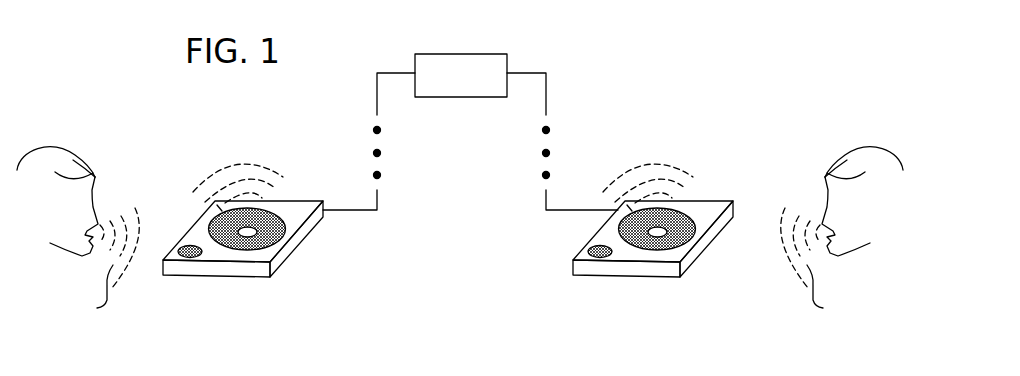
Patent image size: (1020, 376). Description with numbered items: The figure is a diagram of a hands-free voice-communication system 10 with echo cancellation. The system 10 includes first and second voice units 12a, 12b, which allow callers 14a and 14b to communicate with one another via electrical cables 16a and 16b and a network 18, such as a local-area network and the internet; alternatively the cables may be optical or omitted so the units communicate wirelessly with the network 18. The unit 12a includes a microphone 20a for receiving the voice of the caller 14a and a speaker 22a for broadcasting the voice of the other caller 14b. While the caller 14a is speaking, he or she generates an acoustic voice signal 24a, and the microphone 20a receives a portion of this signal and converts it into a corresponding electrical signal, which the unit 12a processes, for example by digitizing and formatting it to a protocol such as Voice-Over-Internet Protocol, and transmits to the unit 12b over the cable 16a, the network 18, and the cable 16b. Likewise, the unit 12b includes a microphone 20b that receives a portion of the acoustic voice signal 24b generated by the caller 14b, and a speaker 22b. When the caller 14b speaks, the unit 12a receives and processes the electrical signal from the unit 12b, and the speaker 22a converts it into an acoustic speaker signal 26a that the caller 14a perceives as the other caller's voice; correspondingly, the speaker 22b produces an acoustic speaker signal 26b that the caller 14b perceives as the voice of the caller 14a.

The hands-free voice-communication system 10 is at (665, 60).
The first voice unit 12a is at (177, 278).
The second voice unit 12b is at (587, 278).
The caller 14a is at (98, 178).
The caller 14b is at (832, 156).
The electrical cable 16a is at (347, 212).
The electrical cable 16b is at (568, 212).
The network 18 is at (508, 63).
The microphone 20a is at (195, 257).
The microphone 20b is at (605, 257).
The speaker 22a is at (275, 240).
The speaker 22b is at (684, 240).
The acoustic voice signal 24a is at (97, 308).
The acoustic voice signal 24b is at (813, 297).
The acoustic speaker signal 26a is at (303, 186).
The acoustic speaker signal 26b is at (705, 184).